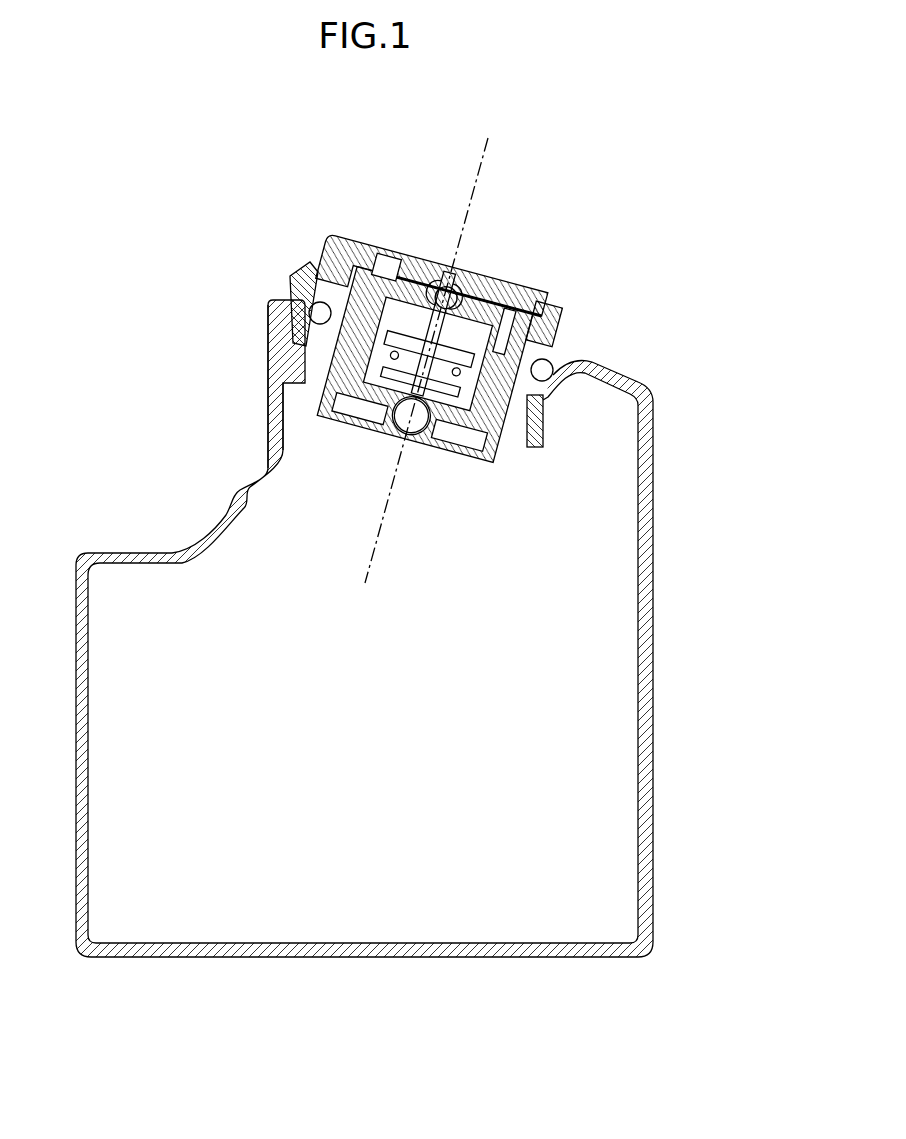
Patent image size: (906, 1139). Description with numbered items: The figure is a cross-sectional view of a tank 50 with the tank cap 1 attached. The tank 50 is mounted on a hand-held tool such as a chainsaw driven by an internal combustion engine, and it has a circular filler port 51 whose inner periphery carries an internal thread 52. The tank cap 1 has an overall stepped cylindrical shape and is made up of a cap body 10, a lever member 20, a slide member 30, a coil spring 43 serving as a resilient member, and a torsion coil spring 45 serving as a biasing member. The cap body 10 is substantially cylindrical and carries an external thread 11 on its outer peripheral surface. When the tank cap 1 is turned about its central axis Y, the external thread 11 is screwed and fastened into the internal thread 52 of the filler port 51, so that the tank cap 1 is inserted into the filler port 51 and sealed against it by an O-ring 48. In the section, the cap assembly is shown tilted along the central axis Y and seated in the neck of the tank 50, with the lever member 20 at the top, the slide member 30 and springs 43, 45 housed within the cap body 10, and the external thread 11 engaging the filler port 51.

The tank cap 1 is at (575, 262).
The cap body 10 is at (412, 443).
The external thread 11 is at (515, 423).
The lever member 20 is at (372, 250).
The slide member 30 is at (523, 285).
The coil spring 43 is at (405, 422).
The torsion coil spring 45 is at (465, 280).
The O-ring 48 is at (293, 295).
The tank 50 is at (653, 537).
The filler port 51 is at (313, 377).
The internal thread 52 is at (313, 342).
The central axis Y is at (483, 178).